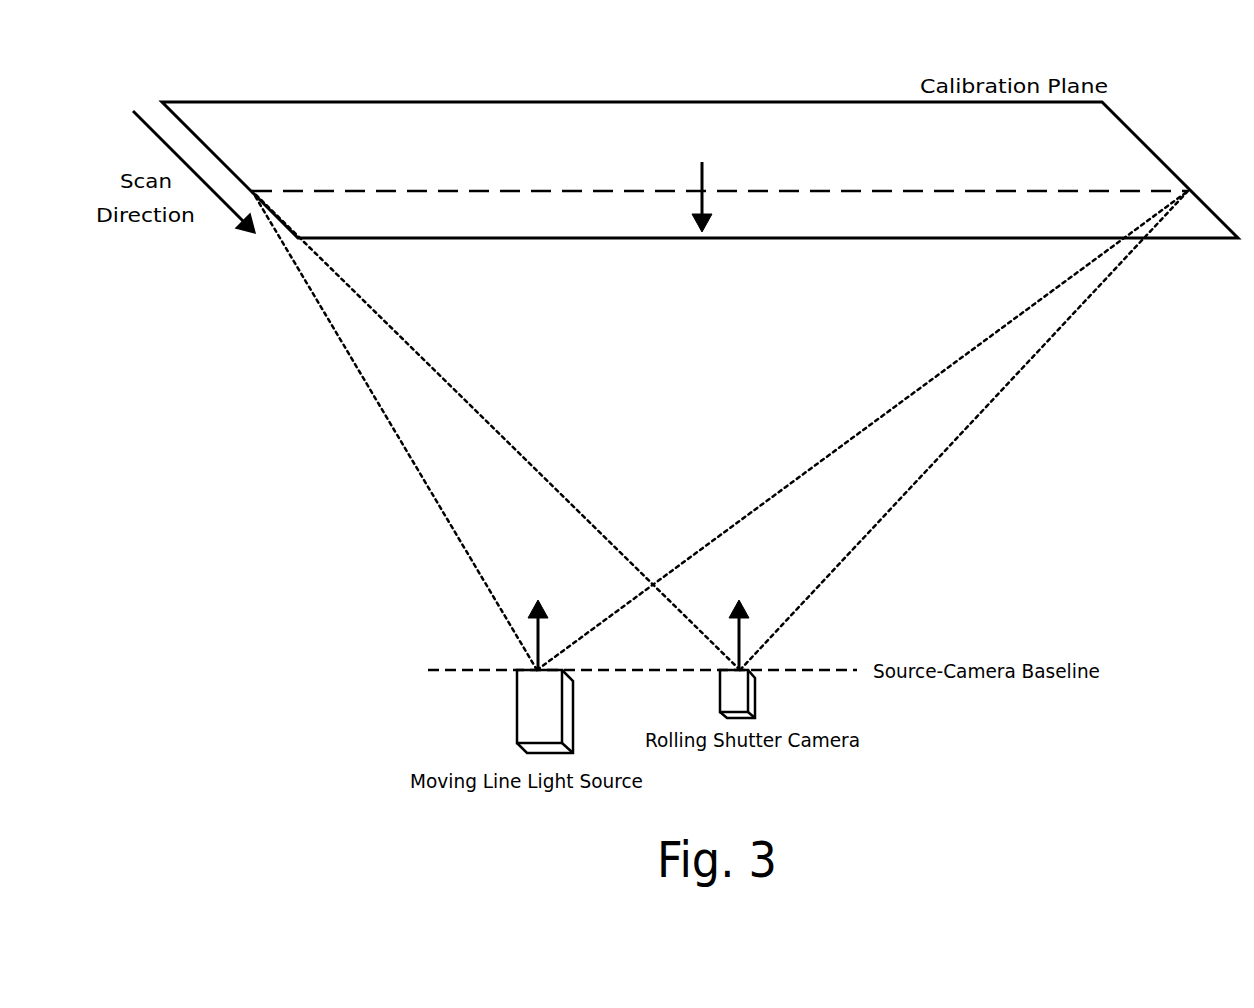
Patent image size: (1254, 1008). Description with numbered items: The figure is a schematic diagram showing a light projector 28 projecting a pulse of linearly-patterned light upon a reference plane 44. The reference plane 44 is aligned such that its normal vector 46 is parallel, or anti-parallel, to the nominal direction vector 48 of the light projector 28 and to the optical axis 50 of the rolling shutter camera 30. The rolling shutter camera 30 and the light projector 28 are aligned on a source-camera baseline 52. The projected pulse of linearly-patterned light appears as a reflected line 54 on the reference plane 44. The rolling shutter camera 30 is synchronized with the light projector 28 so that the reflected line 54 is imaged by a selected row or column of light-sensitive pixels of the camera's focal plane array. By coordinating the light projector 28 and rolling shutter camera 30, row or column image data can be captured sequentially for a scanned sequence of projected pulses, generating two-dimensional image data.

The light projector 28 is at (528, 711).
The rolling shutter camera 30 is at (732, 685).
The reference plane 44 is at (780, 101).
The normal vector 46 is at (697, 174).
The nominal direction vector 48 is at (537, 632).
The optical axis 50 is at (735, 633).
The source-camera baseline 52 is at (824, 668).
The reflected line 54 is at (975, 190).